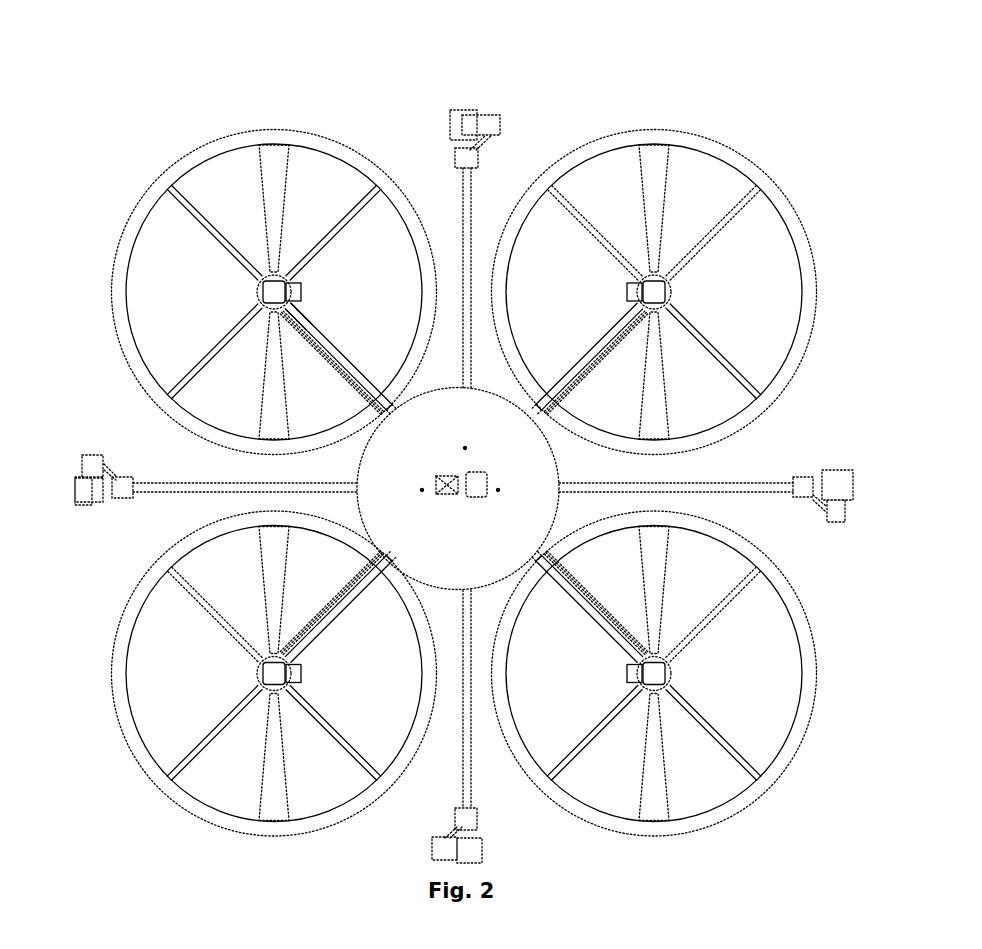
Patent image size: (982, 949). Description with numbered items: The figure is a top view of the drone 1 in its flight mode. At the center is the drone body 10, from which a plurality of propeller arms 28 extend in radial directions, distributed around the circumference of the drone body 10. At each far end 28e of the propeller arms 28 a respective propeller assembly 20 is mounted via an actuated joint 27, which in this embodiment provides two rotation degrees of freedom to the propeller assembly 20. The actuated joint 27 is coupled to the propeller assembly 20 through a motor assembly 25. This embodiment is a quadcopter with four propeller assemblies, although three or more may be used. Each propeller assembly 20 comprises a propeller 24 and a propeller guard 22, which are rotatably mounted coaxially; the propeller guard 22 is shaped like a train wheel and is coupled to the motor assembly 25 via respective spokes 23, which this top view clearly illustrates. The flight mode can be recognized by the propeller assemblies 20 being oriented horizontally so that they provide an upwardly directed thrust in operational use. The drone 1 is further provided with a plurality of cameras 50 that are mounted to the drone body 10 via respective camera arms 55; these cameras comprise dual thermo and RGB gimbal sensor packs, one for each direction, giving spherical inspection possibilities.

The drone 1 is at (142, 82).
The drone body 10 is at (446, 548).
The propeller assembly 20 is at (156, 183).
The propeller guard 22 is at (783, 387).
The spoke 23 is at (712, 351).
The propeller 24 is at (660, 196).
The motor assembly 25 is at (667, 291).
The actuated joint 27 is at (637, 278).
The propeller arm 28 is at (330, 320).
The far end of the propeller arm 28e is at (319, 279).
The camera 50 is at (480, 115).
The camera arm 55 is at (468, 203).